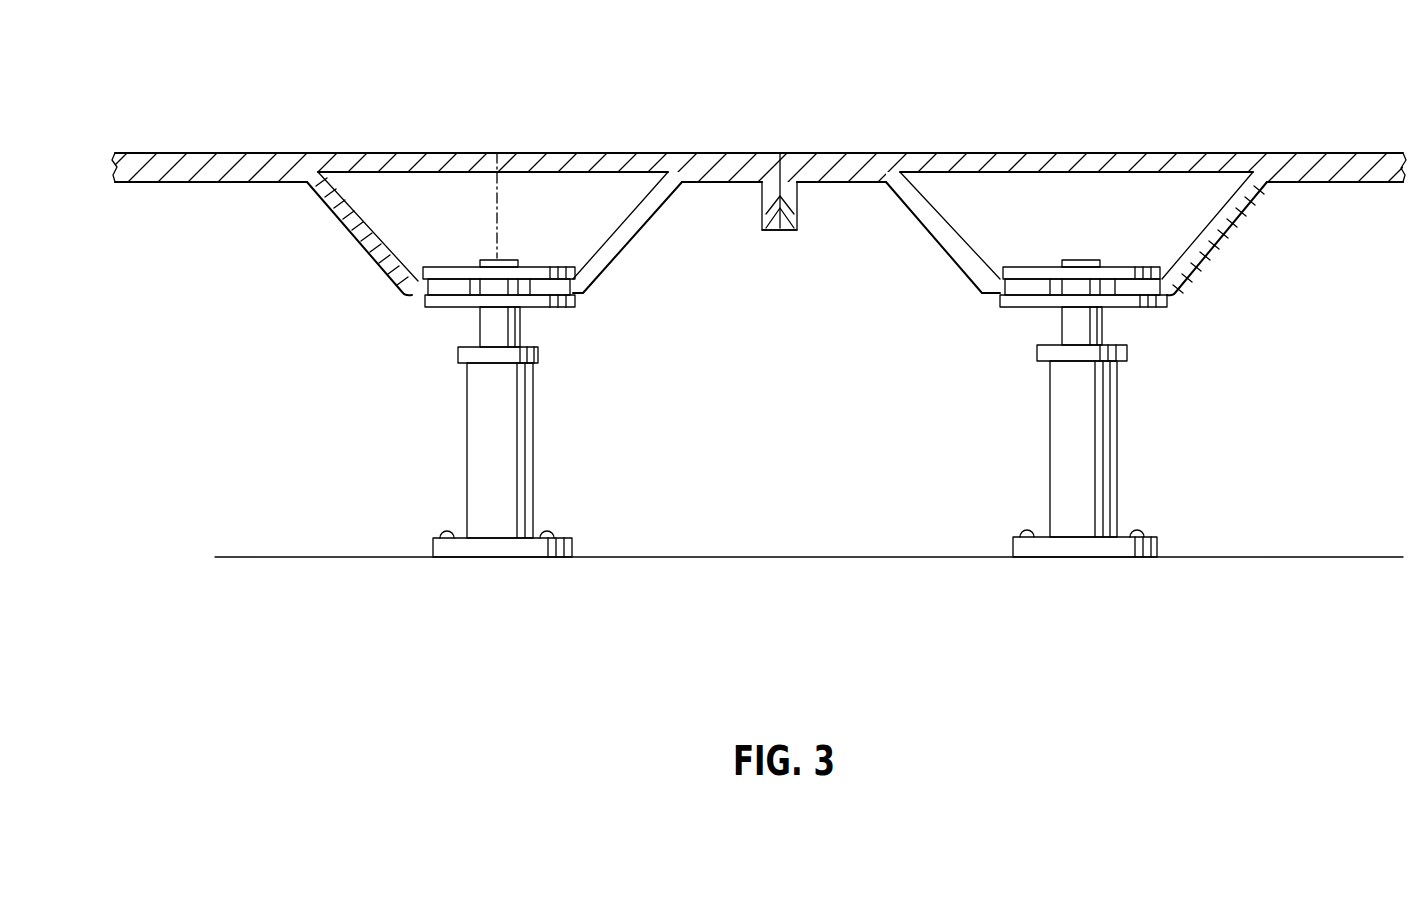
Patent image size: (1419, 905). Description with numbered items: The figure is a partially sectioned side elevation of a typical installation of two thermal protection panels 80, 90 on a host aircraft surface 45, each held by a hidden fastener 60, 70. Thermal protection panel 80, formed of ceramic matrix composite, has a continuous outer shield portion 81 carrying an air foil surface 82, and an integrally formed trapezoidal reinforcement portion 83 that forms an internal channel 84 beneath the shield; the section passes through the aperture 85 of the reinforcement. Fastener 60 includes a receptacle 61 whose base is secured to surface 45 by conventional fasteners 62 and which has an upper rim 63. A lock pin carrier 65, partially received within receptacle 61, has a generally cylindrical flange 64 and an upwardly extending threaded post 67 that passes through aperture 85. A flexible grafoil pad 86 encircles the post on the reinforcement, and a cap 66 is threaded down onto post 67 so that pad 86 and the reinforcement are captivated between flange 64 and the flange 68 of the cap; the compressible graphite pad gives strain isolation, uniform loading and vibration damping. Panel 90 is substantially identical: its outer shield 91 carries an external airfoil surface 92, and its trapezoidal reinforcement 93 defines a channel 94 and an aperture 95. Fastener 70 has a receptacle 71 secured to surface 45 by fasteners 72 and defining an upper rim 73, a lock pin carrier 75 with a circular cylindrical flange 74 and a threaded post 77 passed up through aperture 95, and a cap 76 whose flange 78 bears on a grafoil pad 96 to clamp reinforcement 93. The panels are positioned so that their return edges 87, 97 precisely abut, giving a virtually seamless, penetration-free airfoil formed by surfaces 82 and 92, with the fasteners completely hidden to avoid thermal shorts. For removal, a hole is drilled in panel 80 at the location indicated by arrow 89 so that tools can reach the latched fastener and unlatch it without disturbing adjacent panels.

The host aircraft surface 45 is at (240, 556).
The fastener 60 is at (521, 379).
The receptacle 61 is at (531, 487).
The fasteners 62 is at (555, 535).
The upper rim 63 is at (539, 357).
The flange 64 is at (580, 302).
The lock pin carrier 65 is at (521, 330).
The cap 66 is at (555, 264).
The threaded post 67 is at (508, 261).
The flange 68 is at (484, 272).
The fastener 70 is at (1110, 368).
The receptacle 71 is at (1114, 453).
The fasteners 72 is at (1137, 535).
The upper rim 73 is at (1124, 353).
The flange 74 is at (1168, 303).
The lock pin carrier 75 is at (1103, 325).
The cap 76 is at (1151, 256).
The threaded post 77 is at (1082, 260).
The flange 78 is at (1002, 270).
The thermal protection panel 80 is at (460, 280).
The outer shield portion 81 is at (313, 153).
The air foil surface 82 is at (197, 152).
The trapezoidal reinforcement portion 83 is at (346, 245).
The internal channel 84 is at (360, 190).
The aperture 85 is at (398, 286).
The flexible grafoil pad 86 is at (437, 296).
The return edge 87 is at (773, 232).
The arrow 89 is at (497, 150).
The thermal protection panel 90 is at (1097, 291).
The outer shield 91 is at (1275, 152).
The external airfoil surface 92 is at (1212, 152).
The trapezoidal reinforcement 93 is at (1236, 235).
The channel 94 is at (952, 205).
The aperture 95 is at (1053, 297).
The flexible grafoil pad 96 is at (1003, 290).
The return edge 97 is at (798, 231).